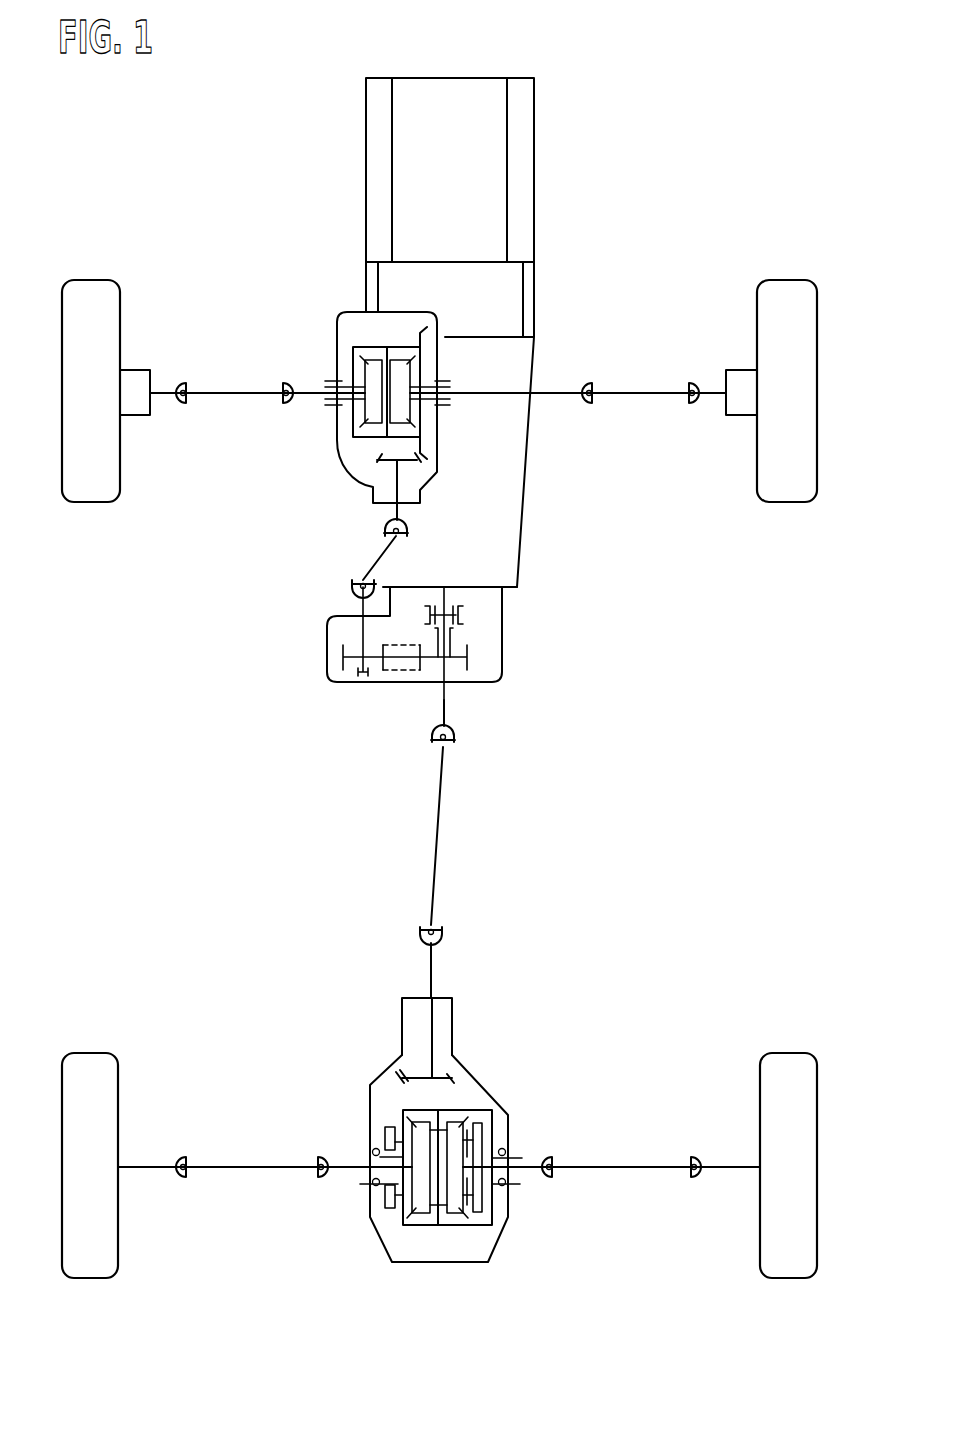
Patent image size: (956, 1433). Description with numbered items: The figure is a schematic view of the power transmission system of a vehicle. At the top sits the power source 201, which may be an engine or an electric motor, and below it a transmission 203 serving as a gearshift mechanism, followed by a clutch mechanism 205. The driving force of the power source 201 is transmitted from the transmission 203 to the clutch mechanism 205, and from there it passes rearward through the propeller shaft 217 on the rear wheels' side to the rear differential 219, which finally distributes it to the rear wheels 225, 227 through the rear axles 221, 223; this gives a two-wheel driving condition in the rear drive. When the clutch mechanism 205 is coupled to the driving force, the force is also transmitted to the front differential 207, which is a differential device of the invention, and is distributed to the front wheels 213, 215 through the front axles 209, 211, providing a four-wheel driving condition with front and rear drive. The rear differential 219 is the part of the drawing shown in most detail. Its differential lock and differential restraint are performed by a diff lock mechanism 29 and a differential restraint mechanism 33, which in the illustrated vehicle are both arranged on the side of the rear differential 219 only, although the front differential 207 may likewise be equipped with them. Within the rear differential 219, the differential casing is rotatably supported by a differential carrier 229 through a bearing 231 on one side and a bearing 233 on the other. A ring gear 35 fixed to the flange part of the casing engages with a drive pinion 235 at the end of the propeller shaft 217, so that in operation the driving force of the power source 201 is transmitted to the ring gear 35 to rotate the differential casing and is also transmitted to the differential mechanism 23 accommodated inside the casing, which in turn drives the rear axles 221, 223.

The power source 201 is at (455, 78).
The transmission 203 is at (534, 481).
The clutch mechanism 205 is at (502, 633).
The front differential 207 is at (365, 328).
The front axle 209 is at (228, 398).
The front axle 211 is at (660, 398).
The front wheel 213 is at (95, 280).
The front wheel 215 is at (786, 280).
The propeller shaft 217 is at (438, 835).
The rear differential 219 is at (439, 1191).
The rear axle 221 is at (233, 1172).
The rear axle 223 is at (640, 1172).
The rear wheel 225 is at (90, 1053).
The rear wheel 227 is at (786, 1053).
The differential carrier 229 is at (402, 1029).
The bearing 231 is at (372, 1150).
The bearing 233 is at (506, 1150).
The drive pinion 235 is at (452, 1068).
The differential mechanism 23 is at (441, 1244).
The diff lock mechanism 29 is at (382, 1228).
The differential restraint mechanism 33 is at (487, 1244).
The ring gear 35 is at (406, 1259).